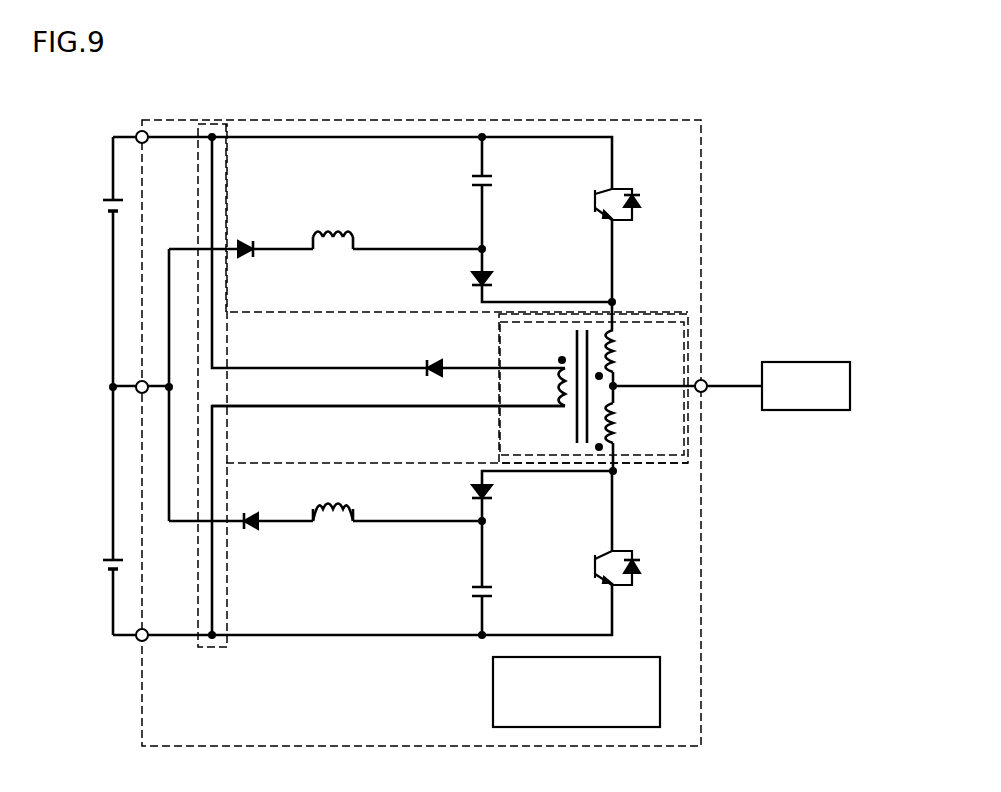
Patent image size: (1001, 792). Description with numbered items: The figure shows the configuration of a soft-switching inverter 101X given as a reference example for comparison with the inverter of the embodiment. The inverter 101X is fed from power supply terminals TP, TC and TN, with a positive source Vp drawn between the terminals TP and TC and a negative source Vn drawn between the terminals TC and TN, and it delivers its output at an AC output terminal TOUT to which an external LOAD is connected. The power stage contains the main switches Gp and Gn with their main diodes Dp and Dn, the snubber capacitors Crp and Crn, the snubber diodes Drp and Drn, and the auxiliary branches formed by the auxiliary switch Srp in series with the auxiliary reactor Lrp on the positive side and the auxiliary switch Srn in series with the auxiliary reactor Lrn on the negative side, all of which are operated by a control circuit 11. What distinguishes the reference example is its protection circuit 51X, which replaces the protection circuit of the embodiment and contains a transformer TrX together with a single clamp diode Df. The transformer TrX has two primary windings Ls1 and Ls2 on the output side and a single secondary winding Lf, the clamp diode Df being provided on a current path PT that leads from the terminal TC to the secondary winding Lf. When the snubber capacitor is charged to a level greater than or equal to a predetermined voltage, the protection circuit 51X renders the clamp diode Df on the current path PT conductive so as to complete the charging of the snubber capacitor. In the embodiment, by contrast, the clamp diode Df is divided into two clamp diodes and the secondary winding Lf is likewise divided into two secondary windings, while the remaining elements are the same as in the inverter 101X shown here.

The soft-switching inverter 101X is at (668, 118).
The protection circuit 51X is at (655, 312).
The power supply terminal TP is at (139, 130).
The power supply terminal TC is at (138, 382).
The power supply terminal TN is at (139, 643).
The AC output terminal TOUT is at (706, 380).
The positive DC voltage source Vp is at (105, 198).
The negative DC voltage source Vn is at (105, 558).
The auxiliary switch Srp is at (255, 245).
The auxiliary reactor Lrp is at (333, 228).
The snubber capacitor Crp is at (486, 178).
The snubber diode Drp is at (488, 276).
The main switch Gp is at (592, 200).
The main diode Dp is at (636, 190).
The clamp diode Df is at (426, 365).
The current path PT is at (290, 408).
The transformer TrX is at (629, 388).
The secondary winding Lf is at (560, 384).
The primary winding Ls1 is at (612, 343).
The primary winding Ls2 is at (612, 418).
The snubber diode Drn is at (488, 500).
The snubber capacitor Crn is at (488, 594).
The main switch Gn is at (592, 563).
The main diode Dn is at (636, 555).
The auxiliary switch Srn is at (257, 525).
The auxiliary reactor Lrn is at (333, 527).
The control circuit 11 is at (645, 655).
The load LOAD is at (806, 386).